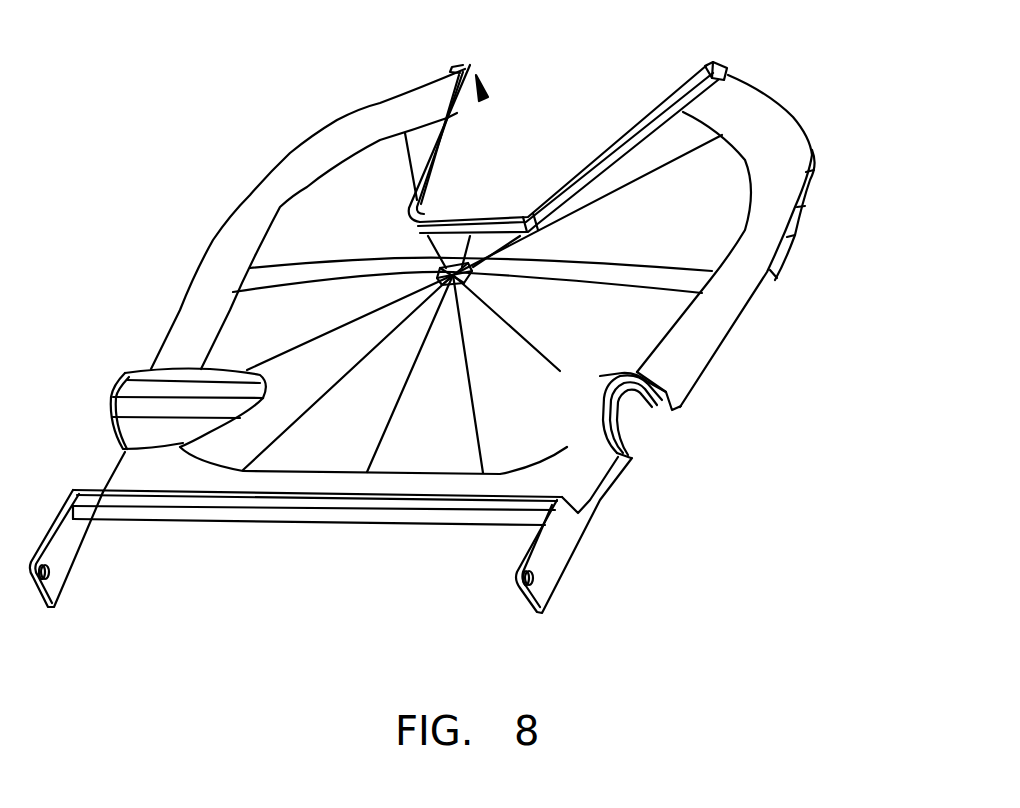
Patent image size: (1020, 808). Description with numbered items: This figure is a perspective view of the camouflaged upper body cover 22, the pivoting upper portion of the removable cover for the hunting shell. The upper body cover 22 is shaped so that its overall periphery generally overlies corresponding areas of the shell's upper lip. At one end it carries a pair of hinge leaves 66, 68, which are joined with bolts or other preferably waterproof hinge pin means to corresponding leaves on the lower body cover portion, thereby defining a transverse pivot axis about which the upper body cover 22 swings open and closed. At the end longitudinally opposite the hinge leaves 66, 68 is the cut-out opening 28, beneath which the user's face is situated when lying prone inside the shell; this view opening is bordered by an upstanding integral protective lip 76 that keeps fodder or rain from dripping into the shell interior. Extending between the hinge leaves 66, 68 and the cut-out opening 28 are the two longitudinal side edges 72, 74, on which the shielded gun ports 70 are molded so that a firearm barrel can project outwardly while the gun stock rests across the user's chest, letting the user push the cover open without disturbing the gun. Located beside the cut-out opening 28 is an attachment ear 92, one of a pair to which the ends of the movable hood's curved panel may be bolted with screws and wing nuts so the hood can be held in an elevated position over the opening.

The upper body cover 22 is at (520, 303).
The cut-out opening 28 is at (531, 126).
The hinge leaf 66 is at (70, 547).
The hinge leaf 68 is at (540, 590).
The shielded gun port 70 is at (455, 67).
The longitudinal side edge 72 is at (177, 313).
The longitudinal side edge 74 is at (730, 295).
The protective lip 76 is at (452, 125).
The attachment ear 92 is at (723, 72).